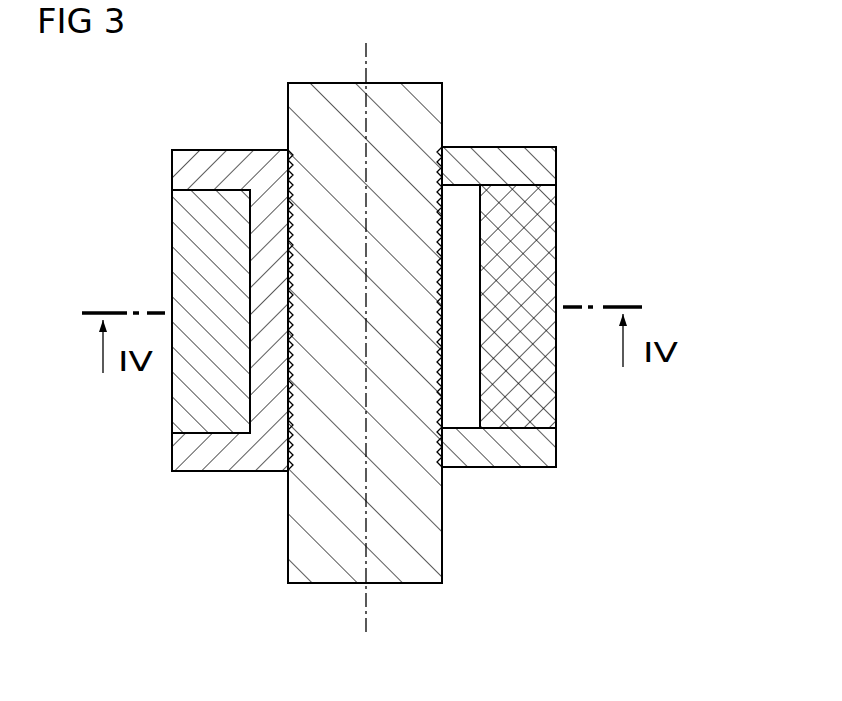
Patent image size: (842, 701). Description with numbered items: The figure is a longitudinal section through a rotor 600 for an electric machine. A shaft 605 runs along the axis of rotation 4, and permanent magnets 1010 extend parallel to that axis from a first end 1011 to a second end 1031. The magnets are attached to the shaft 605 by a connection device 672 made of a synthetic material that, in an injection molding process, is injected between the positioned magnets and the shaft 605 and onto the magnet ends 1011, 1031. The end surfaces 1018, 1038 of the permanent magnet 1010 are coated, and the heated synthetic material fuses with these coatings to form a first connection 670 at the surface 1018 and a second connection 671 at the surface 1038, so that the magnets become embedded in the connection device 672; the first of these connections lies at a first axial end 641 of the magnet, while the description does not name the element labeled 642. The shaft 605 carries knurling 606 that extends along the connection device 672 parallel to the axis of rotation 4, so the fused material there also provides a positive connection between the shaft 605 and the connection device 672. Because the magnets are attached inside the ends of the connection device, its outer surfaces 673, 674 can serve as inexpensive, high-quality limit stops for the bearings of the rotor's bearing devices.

The rotor 600 is at (464, 107).
The shaft 605 is at (432, 535).
The knurling 606 is at (290, 178).
The first axial end 641 is at (581, 150).
The lower side of right connection element 642 is at (578, 452).
The first connection 670 is at (161, 157).
The second connection 671 is at (154, 443).
The connection device 672 is at (215, 488).
The outer surface of the connection device 673 is at (267, 474).
The outer surface of the connection device 674 is at (267, 150).
The permanent magnet 1010 is at (180, 270).
The first end 1011 is at (162, 188).
The coated surface 1018 is at (210, 189).
The second end 1031 is at (159, 430).
The coated surface 1038 is at (212, 439).
The axis of rotation 4 is at (368, 622).